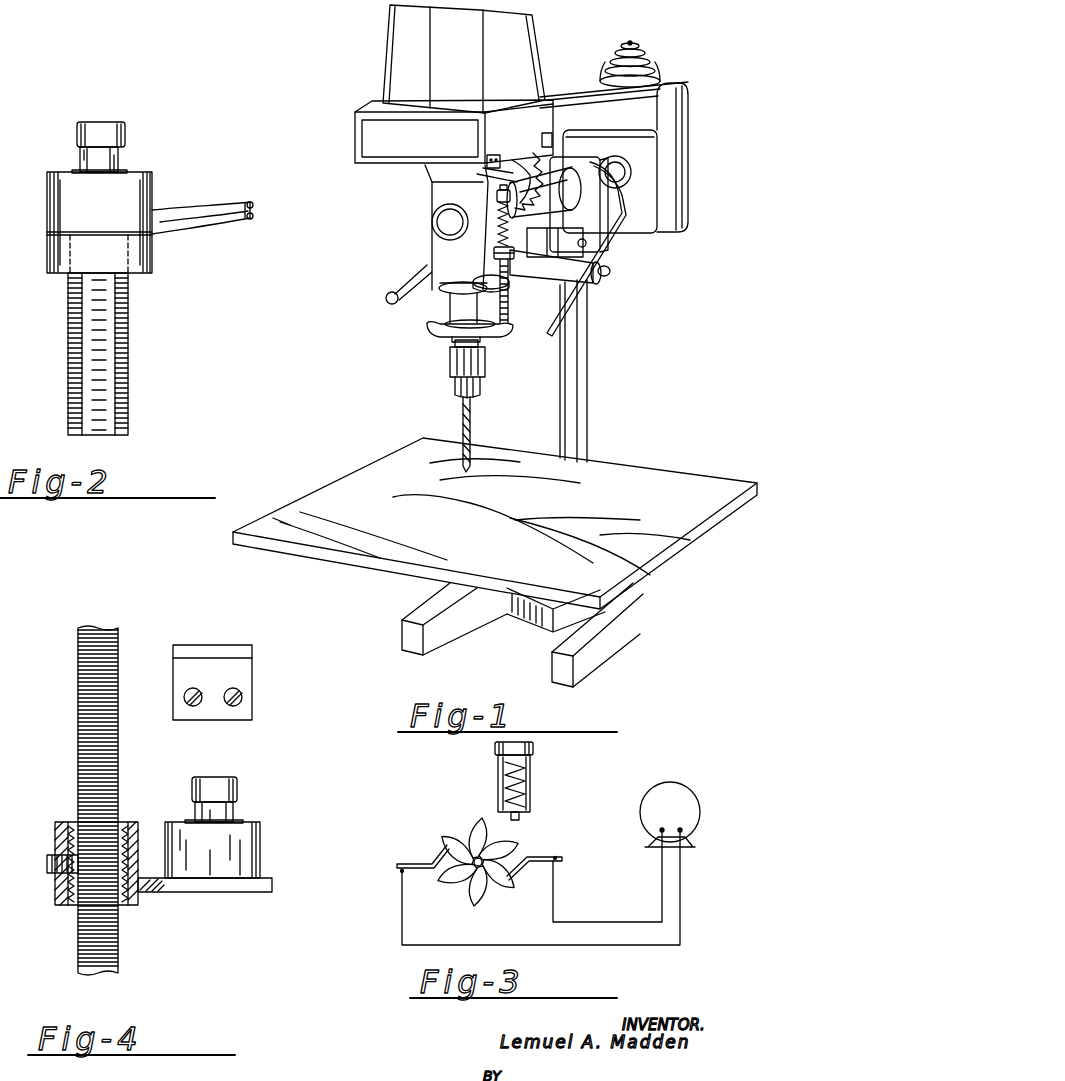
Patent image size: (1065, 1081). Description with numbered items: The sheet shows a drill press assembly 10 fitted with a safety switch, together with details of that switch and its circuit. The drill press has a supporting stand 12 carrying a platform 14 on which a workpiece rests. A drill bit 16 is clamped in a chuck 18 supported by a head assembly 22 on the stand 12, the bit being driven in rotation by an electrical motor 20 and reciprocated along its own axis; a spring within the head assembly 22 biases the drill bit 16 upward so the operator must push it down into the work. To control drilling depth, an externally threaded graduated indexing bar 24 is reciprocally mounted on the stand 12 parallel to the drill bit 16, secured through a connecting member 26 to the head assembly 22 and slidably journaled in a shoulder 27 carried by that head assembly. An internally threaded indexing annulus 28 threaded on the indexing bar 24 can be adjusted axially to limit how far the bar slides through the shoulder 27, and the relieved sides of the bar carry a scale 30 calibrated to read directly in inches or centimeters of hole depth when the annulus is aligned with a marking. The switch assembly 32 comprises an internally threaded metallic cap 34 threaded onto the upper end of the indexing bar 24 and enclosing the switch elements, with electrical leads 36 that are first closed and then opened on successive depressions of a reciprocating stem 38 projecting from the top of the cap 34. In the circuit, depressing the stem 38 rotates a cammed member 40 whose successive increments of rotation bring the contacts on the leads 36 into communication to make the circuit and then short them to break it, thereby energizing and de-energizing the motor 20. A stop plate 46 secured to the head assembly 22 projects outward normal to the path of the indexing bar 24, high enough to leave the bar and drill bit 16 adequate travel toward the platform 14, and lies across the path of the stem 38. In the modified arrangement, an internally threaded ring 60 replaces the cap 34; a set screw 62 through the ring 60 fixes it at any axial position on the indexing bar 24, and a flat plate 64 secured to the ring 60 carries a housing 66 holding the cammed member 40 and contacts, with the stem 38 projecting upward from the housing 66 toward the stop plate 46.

In FIG. 1, the drill press assembly 10 is at (660, 327).
In FIG. 1, the supporting stand 12 is at (570, 405).
In FIG. 1, the platform 14 is at (690, 540).
In FIG. 1, the drill bit 16 is at (461, 411).
In FIG. 1, the chuck 18 is at (452, 368).
In FIG. 1, the electrical motor 20 is at (683, 103).
In FIG. 3, the electrical motor 20 is at (679, 821).
In FIG. 1, the head assembly 22 is at (437, 190).
In FIG. 1, the graduated indexing bar 24 is at (510, 306).
In FIG. 2, the graduated indexing bar 24 is at (136, 367).
In FIG. 4, the graduated indexing bar 24 is at (72, 665).
In FIG. 1, the connecting member 26 is at (494, 338).
In FIG. 1, the shoulder 27 is at (508, 290).
In FIG. 1, the indexing annulus 28 is at (512, 270).
In FIG. 2, the scale 30 is at (110, 302).
In FIG. 1, the switch assembly 32 is at (514, 170).
In FIG. 2, the switch assembly 32 is at (160, 175).
In FIG. 4, the switch assembly 32 is at (190, 920).
In FIG. 2, the metallic cap 34 is at (62, 207).
In FIG. 2, the electrical leads 36 is at (249, 200).
In FIG. 3, the electrical leads 36 is at (403, 918).
In FIG. 2, the stem 38 is at (88, 155).
In FIG. 3, the stem 38 is at (536, 746).
In FIG. 4, the stem 38 is at (232, 810).
In FIG. 3, the cammed member 40 is at (466, 835).
In FIG. 1, the stop plate 46 is at (497, 182).
In FIG. 4, the stop plate 46 is at (245, 665).
In FIG. 4, the internally threaded ring 60 is at (58, 915).
In FIG. 4, the set screw 62 is at (52, 900).
In FIG. 4, the flat plate 64 is at (222, 885).
In FIG. 4, the housing 66 is at (250, 836).